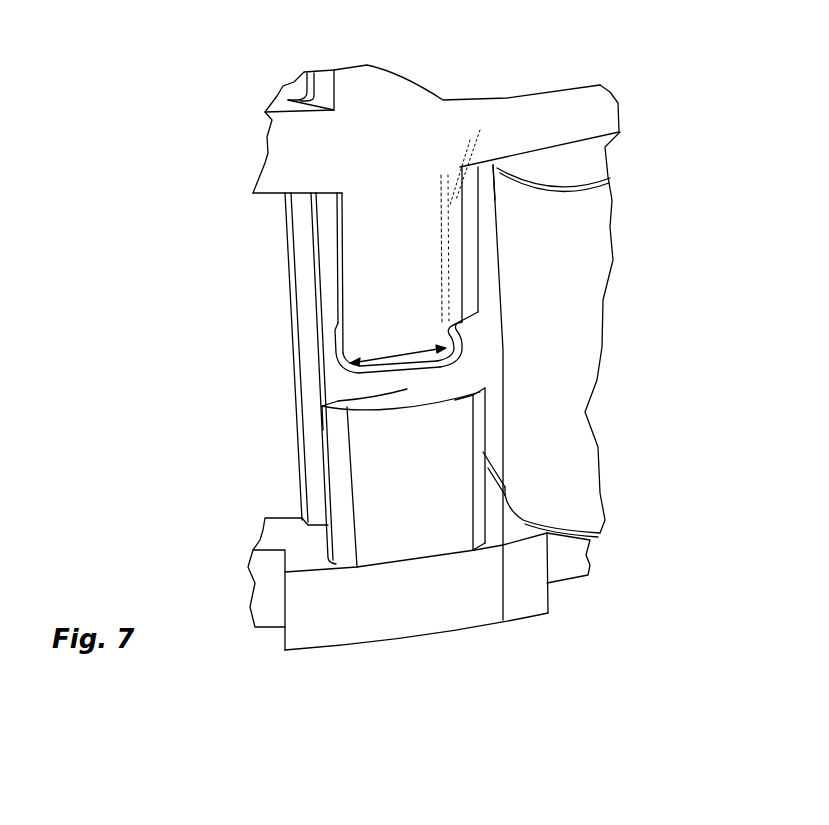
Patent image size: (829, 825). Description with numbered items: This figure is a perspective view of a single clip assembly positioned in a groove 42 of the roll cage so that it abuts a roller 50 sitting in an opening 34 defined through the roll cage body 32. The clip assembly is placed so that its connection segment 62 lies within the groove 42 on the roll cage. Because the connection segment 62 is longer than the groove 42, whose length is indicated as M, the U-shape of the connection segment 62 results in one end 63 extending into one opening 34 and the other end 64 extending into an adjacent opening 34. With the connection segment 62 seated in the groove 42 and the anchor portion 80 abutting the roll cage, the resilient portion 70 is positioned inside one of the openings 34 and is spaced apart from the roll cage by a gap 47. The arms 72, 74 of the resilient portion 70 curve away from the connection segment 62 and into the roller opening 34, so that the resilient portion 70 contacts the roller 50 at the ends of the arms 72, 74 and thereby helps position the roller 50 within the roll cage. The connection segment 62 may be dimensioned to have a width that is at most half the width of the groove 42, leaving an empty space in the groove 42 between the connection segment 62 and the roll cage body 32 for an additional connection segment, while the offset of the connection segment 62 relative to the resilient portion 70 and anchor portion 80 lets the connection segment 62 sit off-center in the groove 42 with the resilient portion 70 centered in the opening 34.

The roll cage body 32 is at (352, 233).
The opening 34 is at (488, 252).
The groove 42 is at (363, 372).
The gap 47 is at (453, 325).
The roller 50 is at (583, 347).
The connection segment 62 is at (405, 393).
The end 63 is at (453, 402).
The other end 64 is at (347, 379).
The resilient portion 70 is at (444, 258).
The arm 72 is at (493, 165).
The arm 74 is at (503, 620).
The anchor portion 80 is at (328, 355).
The length of groove M is at (395, 355).